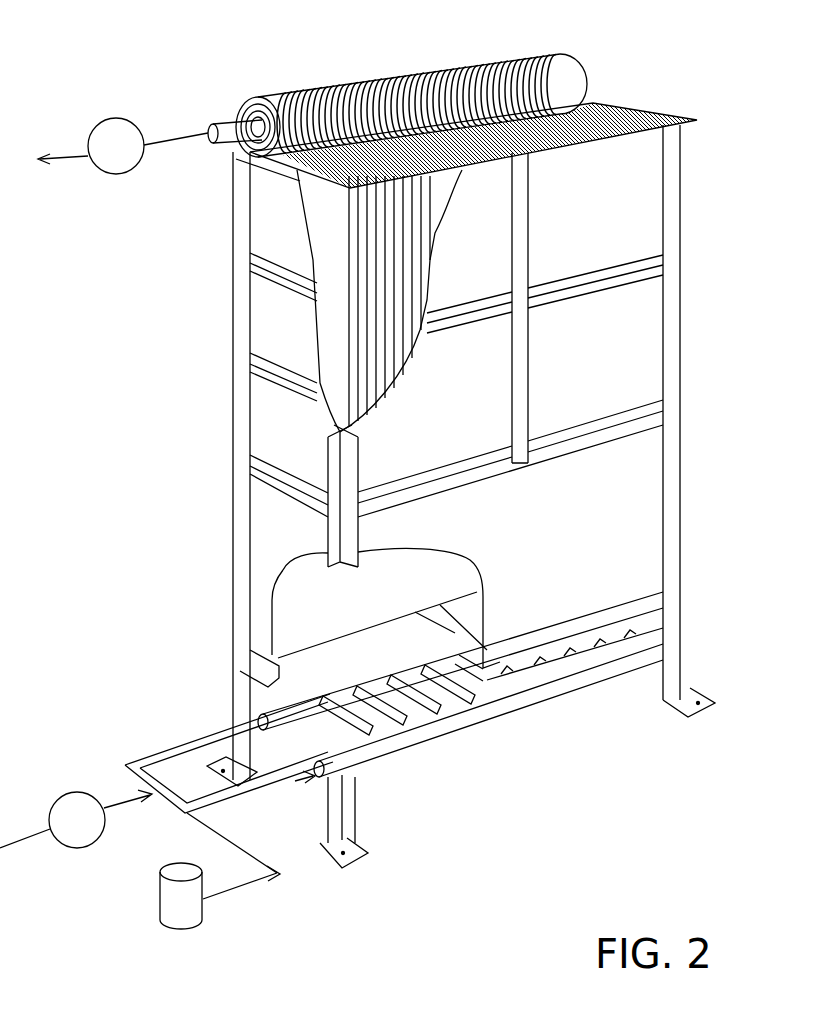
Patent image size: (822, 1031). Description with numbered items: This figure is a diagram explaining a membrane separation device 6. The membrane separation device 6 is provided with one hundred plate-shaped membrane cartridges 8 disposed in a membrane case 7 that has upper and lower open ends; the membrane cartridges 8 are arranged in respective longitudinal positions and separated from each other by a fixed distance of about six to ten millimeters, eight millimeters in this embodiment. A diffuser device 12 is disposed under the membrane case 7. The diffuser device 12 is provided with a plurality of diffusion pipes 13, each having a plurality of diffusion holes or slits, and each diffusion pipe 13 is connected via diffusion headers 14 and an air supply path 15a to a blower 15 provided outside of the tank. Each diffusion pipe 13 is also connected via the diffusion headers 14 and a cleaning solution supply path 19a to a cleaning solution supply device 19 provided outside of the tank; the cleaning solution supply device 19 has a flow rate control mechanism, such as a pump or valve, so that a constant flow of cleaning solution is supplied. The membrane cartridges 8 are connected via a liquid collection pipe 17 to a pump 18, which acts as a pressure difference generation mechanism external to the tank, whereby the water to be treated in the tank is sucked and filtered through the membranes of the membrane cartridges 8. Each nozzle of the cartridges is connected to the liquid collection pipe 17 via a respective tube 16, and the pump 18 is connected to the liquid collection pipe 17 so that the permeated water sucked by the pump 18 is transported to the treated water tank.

The membrane separation device 6 is at (712, 301).
The membrane case 7 is at (664, 195).
The membrane cartridge 8 is at (440, 233).
The diffuser device 12 is at (477, 794).
The diffusion pipe 13 is at (422, 705).
The diffusion header 14 is at (457, 700).
The blower 15 is at (77, 848).
The air supply path 15a is at (148, 758).
The tube 16 is at (307, 87).
The liquid collection pipe 17 is at (220, 118).
The pump 18 is at (116, 118).
The cleaning solution supply device 19 is at (180, 928).
The cleaning solution supply path 19a is at (233, 836).